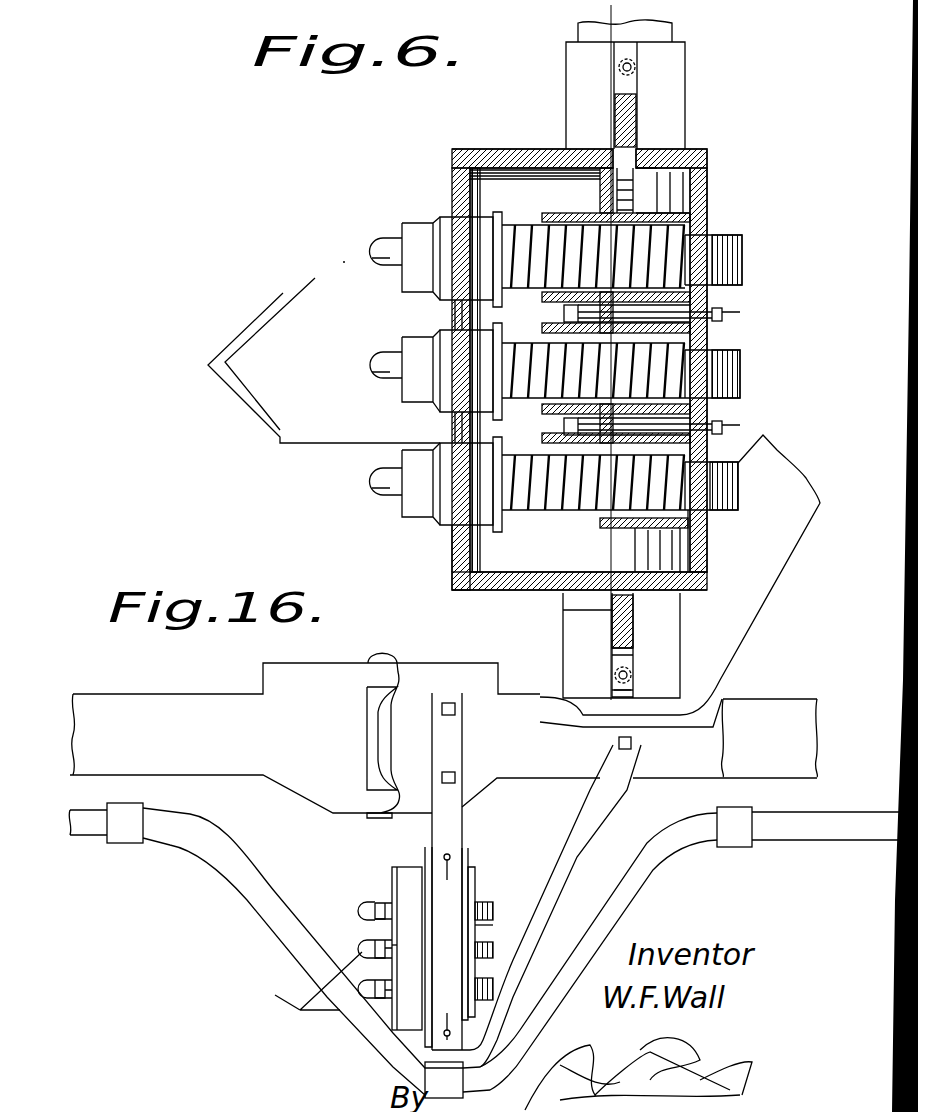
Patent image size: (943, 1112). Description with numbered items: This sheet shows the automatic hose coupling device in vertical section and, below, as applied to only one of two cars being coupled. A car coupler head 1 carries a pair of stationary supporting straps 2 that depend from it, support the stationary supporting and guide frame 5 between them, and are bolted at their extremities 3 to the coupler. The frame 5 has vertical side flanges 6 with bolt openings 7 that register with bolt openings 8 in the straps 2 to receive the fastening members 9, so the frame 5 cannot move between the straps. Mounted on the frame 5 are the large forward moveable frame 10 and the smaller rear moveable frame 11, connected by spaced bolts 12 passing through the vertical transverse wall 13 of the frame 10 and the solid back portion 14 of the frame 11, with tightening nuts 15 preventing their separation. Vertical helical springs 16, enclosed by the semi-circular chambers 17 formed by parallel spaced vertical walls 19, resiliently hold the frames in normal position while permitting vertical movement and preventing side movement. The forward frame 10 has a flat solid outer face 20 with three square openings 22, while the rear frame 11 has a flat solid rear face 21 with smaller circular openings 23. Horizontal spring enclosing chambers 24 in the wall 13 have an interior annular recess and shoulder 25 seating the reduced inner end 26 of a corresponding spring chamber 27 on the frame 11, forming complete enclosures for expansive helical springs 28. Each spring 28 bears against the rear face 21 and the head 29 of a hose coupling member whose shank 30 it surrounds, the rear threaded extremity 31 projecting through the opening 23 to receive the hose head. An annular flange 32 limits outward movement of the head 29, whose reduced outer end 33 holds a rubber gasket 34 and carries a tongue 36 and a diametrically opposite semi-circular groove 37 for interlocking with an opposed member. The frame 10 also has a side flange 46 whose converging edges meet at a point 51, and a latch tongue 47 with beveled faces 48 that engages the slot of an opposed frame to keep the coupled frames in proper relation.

In FIG. 16, the car coupler head 1 is at (512, 785).
In FIG. 6, the stationary supporting straps 2 is at (672, 32).
In FIG. 16, the stationary supporting straps 2 is at (440, 820).
In FIG. 16, the bolted extremity of supporting strap 3 is at (632, 743).
In FIG. 6, the stationary supporting and guide frame 5 is at (636, 122).
In FIG. 6, the vertical side flanges 6 is at (575, 632).
In FIG. 16, the vertical side flanges 6 is at (470, 852).
In FIG. 6, the bolt openings 7 is at (618, 676).
In FIG. 6, the bolt openings 8 is at (604, 18).
In FIG. 16, the bolt openings 8 is at (458, 1037).
In FIG. 6, the fastening members 9 is at (638, 67).
In FIG. 16, the fastening members 9 is at (441, 945).
In FIG. 6, the forward moveable frame 10 is at (487, 590).
In FIG. 16, the forward moveable frame 10 is at (405, 867).
In FIG. 6, the rear moveable frame 11 is at (685, 604).
In FIG. 16, the rear moveable frame 11 is at (490, 925).
In FIG. 6, the spaced bolts 12 is at (722, 314).
In FIG. 6, the vertical transverse wall 13 is at (563, 314).
In FIG. 6, the solid back portion 14 is at (707, 170).
In FIG. 6, the tightening nuts 15 is at (760, 323).
In FIG. 6, the vertical helical springs 16 is at (587, 601).
In FIG. 6, the semi-circular chambers 17 is at (668, 566).
In FIG. 6, the parallel spaced vertical walls 19 is at (730, 580).
In FIG. 6, the flat solid outer face 20 is at (450, 540).
In FIG. 16, the flat solid outer face 20 is at (390, 875).
In FIG. 6, the flat solid rear face 21 is at (700, 532).
In FIG. 6, the square openings 22 is at (450, 215).
In FIG. 6, the circular openings 23 is at (730, 240).
In FIG. 6, the horizontal spring enclosing chambers 24 is at (548, 215).
In FIG. 6, the interior annular recess and shoulder 25 is at (626, 165).
In FIG. 6, the reduced inner end 26 is at (665, 175).
In FIG. 6, the spring chamber 27 is at (690, 200).
In FIG. 6, the expansive helical spring 28 is at (735, 240).
In FIG. 6, the head of hose coupling member 29 is at (466, 371).
In FIG. 16, the head of hose coupling member 29 is at (380, 1020).
In FIG. 6, the shank 30 is at (535, 290).
In FIG. 6, the rear threaded extremity 31 is at (742, 262).
In FIG. 16, the rear threaded extremity 31 is at (493, 900).
In FIG. 6, the annular flange 32 is at (500, 271).
In FIG. 6, the reduced outer end 33 is at (402, 230).
In FIG. 16, the reduced outer end 33 is at (375, 889).
In FIG. 6, the rubber gasket 34 is at (385, 262).
In FIG. 6, the tongue 36 is at (372, 245).
In FIG. 16, the tongue 36 is at (356, 908).
In FIG. 16, the semi-circular groove 37 is at (385, 952).
In FIG. 16, the side flange 46 is at (399, 937).
In FIG. 6, the latch tongue 47 is at (280, 425).
In FIG. 16, the latch tongue 47 is at (340, 903).
In FIG. 6, the beveled faces 48 is at (330, 262).
In FIG. 16, the beveled faces 48 is at (273, 1001).
In FIG. 16, the point 51 is at (398, 942).